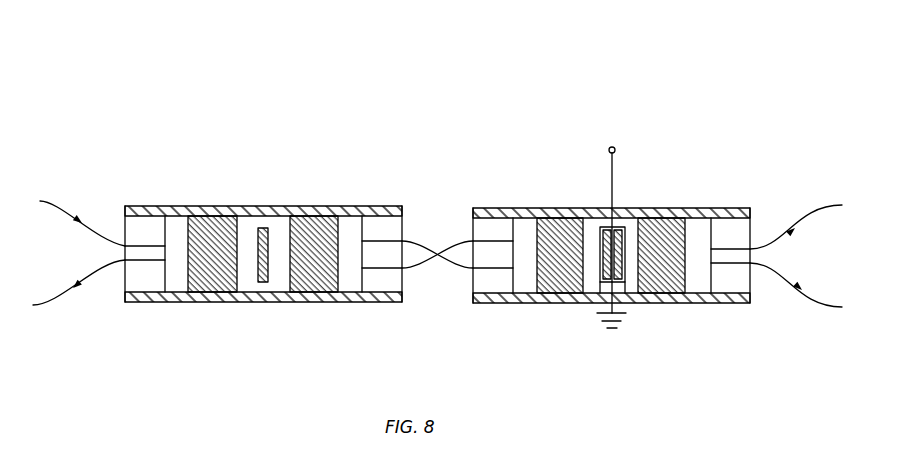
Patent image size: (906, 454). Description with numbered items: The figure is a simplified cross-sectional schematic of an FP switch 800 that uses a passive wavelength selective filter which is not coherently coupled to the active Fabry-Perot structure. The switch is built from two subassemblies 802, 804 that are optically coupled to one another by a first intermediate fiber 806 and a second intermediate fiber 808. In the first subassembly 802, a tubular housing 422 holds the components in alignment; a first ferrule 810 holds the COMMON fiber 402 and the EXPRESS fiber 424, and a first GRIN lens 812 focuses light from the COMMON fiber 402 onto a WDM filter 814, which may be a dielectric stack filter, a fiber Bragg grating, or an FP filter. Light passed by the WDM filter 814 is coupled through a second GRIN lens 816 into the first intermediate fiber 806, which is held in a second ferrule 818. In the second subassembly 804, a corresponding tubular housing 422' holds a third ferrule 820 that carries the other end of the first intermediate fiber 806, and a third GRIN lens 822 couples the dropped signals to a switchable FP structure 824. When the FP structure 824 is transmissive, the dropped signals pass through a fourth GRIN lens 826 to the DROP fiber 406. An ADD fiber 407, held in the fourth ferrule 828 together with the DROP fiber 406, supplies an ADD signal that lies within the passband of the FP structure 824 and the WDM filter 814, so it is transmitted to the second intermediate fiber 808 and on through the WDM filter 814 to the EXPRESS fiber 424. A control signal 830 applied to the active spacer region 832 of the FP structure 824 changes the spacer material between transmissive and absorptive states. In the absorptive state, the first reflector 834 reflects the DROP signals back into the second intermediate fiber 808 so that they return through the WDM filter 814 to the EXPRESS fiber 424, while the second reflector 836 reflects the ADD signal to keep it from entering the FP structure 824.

The FP switch 800 is at (658, 70).
The first subassembly 802 is at (343, 158).
The second subassembly 804 is at (708, 155).
The first intermediate fiber 806 is at (434, 267).
The second intermediate fiber 808 is at (433, 247).
The first ferrule 810 is at (166, 272).
The first GRIN lens 812 is at (236, 272).
The WDM filter 814 is at (263, 228).
The second GRIN lens 816 is at (338, 272).
The second ferrule 818 is at (402, 224).
The third ferrule 820 is at (473, 224).
The third GRIN lens 822 is at (588, 228).
The switchable FP structure 824 is at (623, 225).
The fourth GRIN lens 826 is at (688, 274).
The fourth ferrule 828 is at (750, 222).
The control signal 830 is at (616, 150).
The active spacer region 832 is at (614, 288).
The first reflector 834 is at (602, 284).
The second reflector 836 is at (622, 284).
The COMMON fiber 402 is at (42, 202).
The EXPRESS fiber 424 is at (94, 273).
The DROP fiber 406 is at (793, 281).
The ADD fiber 407 is at (812, 220).
The tubular housing 422 is at (263, 243).
The tubular housing 422' is at (611, 243).